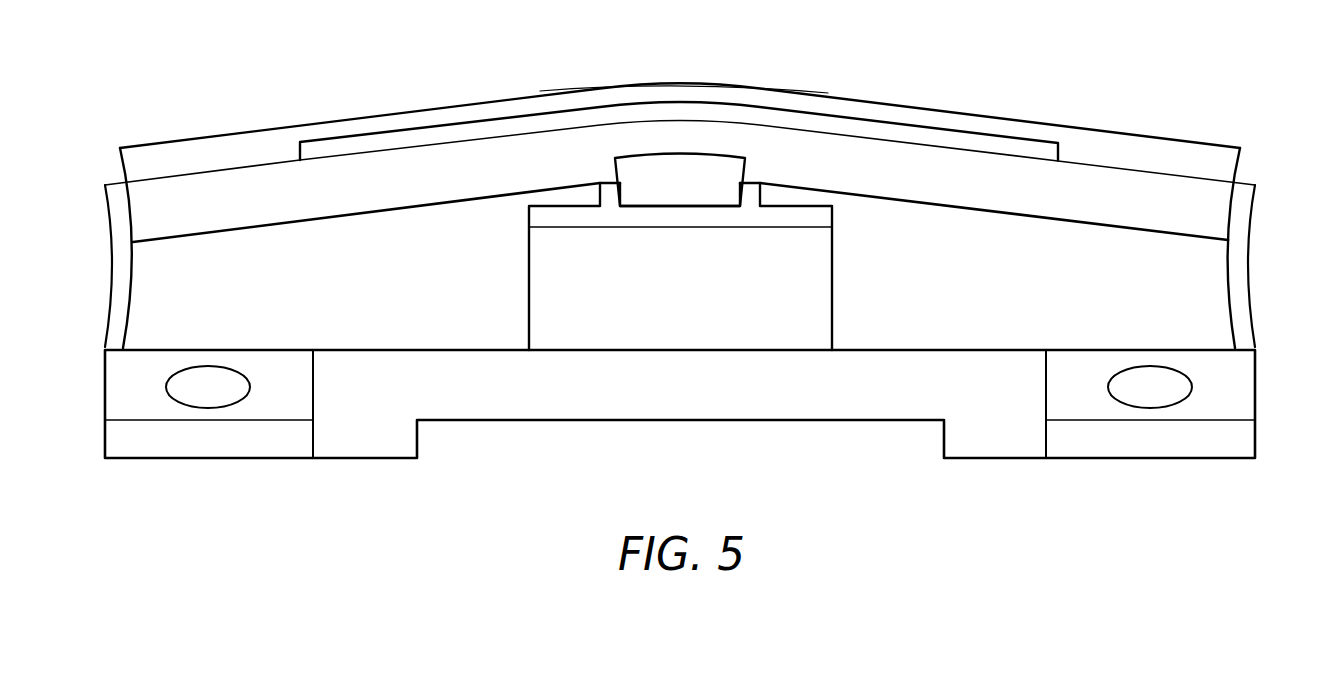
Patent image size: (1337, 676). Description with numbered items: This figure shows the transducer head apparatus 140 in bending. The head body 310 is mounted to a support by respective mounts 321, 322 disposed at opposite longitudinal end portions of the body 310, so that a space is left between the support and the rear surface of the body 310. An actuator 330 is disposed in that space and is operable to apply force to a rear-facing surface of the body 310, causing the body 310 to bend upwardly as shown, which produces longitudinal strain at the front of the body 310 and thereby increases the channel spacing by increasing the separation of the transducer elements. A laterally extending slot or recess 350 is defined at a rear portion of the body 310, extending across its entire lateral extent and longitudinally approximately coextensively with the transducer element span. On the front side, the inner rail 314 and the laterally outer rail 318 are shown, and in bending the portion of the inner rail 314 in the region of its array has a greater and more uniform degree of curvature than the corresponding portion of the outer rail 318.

The transducer head apparatus 140 is at (1268, 311).
The head body 310 is at (1186, 139).
The rail 314 is at (718, 85).
The rail 318 is at (827, 95).
The mount 321 is at (1253, 265).
The mount 322 is at (107, 264).
The actuator 330 is at (833, 262).
The recess 350 is at (677, 167).